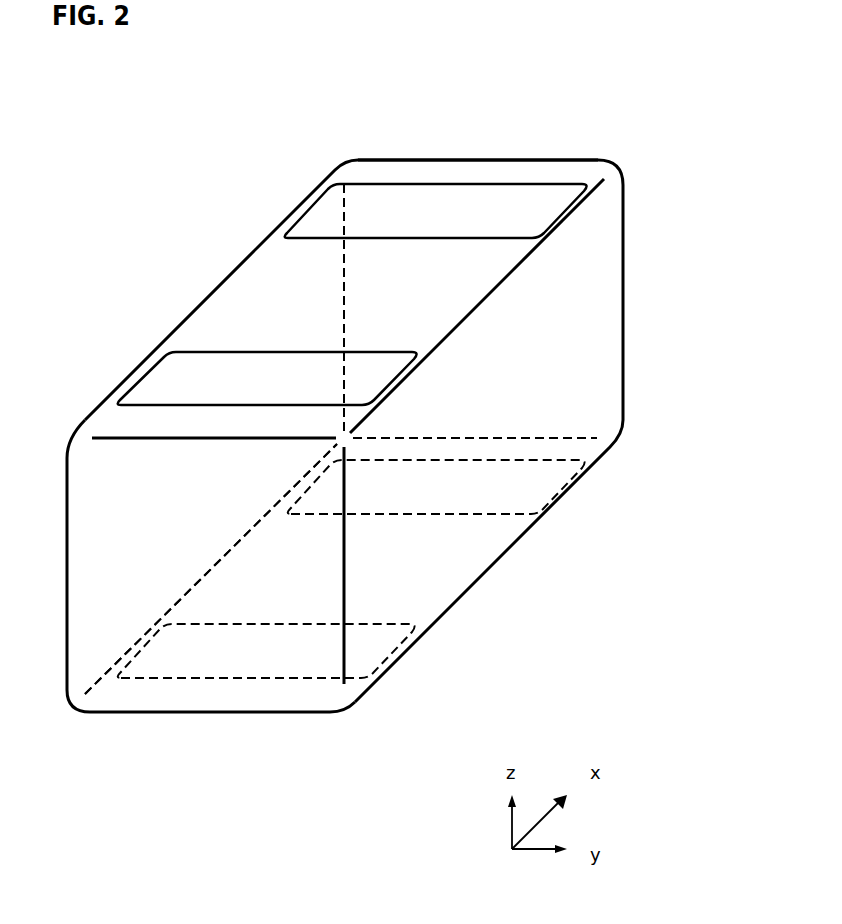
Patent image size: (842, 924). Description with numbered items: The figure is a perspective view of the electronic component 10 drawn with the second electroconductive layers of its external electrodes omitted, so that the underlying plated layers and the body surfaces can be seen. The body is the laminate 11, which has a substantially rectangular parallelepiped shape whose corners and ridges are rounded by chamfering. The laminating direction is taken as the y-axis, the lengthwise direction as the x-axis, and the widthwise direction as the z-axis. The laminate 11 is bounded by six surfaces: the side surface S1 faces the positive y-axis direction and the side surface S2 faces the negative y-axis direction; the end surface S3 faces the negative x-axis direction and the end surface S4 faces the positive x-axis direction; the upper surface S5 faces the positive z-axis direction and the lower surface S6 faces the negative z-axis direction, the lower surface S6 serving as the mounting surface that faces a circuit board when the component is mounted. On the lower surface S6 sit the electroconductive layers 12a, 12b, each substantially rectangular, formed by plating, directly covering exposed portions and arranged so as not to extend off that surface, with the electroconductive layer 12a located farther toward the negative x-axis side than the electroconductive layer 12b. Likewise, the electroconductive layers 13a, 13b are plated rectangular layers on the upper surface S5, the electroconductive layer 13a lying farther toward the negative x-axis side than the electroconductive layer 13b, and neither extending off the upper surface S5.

The electronic component 10 is at (178, 137).
The laminate 11 is at (509, 153).
The electroconductive layer 12a is at (385, 652).
The electroconductive layer 12b is at (543, 487).
The electroconductive layer 13a is at (167, 388).
The electroconductive layer 13b is at (335, 229).
The side surface S1 is at (477, 500).
The side surface S2 is at (193, 368).
The end surface S3 is at (210, 610).
The end surface S4 is at (535, 192).
The upper surface S5 is at (283, 312).
The lower surface S6 is at (428, 568).